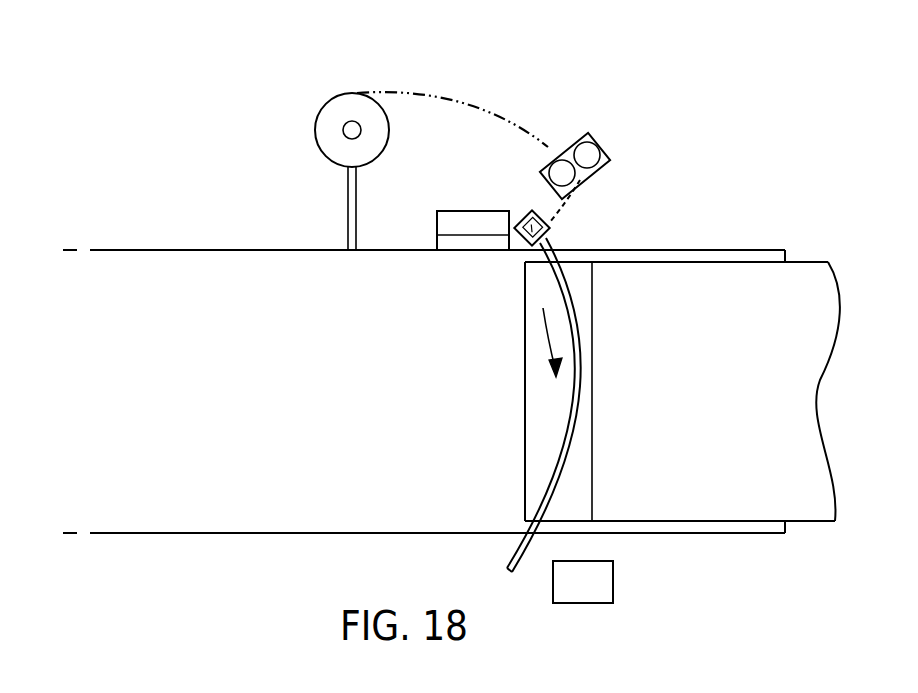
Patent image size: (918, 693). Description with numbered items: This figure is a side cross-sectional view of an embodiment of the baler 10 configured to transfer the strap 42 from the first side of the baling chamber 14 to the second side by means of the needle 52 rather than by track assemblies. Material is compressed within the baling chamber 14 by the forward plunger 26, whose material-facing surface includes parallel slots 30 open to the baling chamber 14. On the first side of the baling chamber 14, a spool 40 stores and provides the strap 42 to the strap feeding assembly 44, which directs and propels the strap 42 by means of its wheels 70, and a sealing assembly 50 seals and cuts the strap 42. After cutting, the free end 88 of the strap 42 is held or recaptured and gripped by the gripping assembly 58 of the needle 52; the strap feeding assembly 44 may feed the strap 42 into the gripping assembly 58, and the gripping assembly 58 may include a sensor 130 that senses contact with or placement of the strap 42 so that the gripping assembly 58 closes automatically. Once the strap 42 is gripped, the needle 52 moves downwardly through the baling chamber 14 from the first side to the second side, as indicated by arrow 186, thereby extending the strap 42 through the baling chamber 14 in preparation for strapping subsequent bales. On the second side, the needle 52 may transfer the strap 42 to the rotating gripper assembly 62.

The baler 10 is at (130, 220).
The baling chamber 14 is at (320, 399).
The forward plunger 26 is at (740, 274).
The slots 30 is at (580, 507).
The spool 40 is at (327, 103).
The strap 42 is at (472, 104).
The strap feeding assembly 44 is at (584, 134).
The sealing assembly 50 is at (470, 211).
The needle 52 is at (574, 412).
The gripping assembly 58 is at (528, 252).
The rotating gripper assembly 62 is at (606, 580).
The wheels 70 is at (592, 152).
The free end 88 is at (562, 210).
The sensor 130 is at (522, 216).
The arrow 186 is at (552, 356).